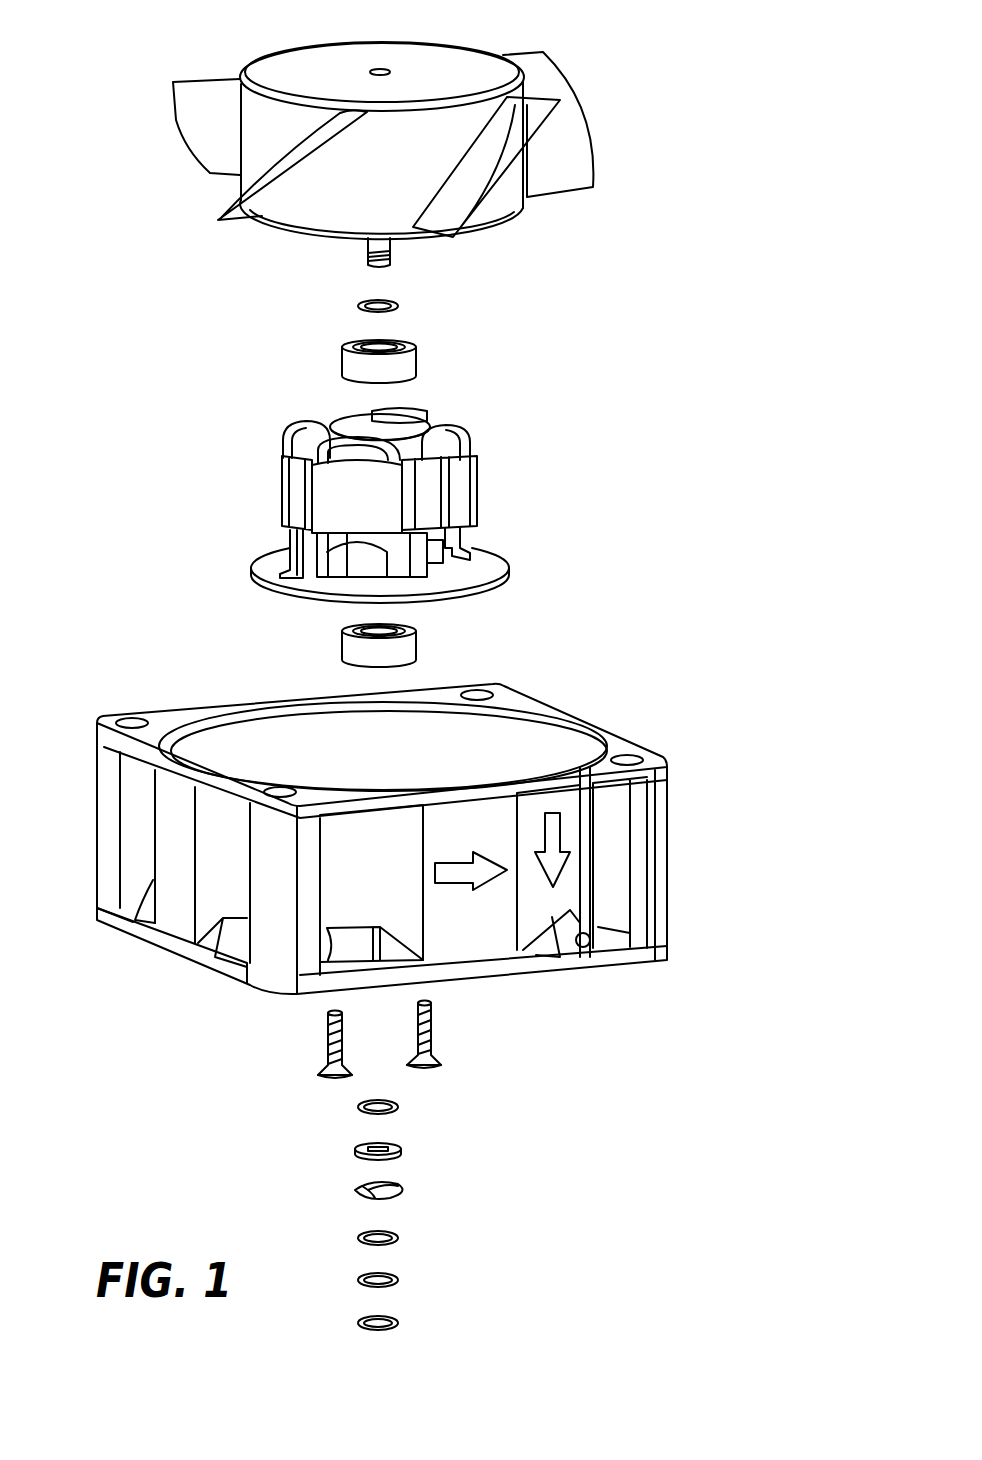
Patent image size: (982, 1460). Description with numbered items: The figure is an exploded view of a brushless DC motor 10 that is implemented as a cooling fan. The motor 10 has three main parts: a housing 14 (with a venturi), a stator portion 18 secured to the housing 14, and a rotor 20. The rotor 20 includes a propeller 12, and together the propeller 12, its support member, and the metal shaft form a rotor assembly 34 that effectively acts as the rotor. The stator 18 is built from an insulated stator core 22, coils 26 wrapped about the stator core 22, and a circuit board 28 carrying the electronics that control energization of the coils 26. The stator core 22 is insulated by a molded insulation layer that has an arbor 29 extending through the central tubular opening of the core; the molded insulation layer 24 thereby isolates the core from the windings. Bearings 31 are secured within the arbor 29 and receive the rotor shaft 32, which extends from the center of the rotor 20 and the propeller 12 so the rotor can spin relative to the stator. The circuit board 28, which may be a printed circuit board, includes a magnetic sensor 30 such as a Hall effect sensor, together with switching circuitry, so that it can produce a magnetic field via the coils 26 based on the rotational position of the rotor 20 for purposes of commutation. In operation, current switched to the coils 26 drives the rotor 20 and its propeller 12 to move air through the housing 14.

The motor 10 is at (774, 196).
The propeller 12 is at (288, 66).
The housing 14 is at (712, 870).
The stator portion 18 is at (248, 475).
The rotor 20 is at (516, 235).
The stator core 22 is at (467, 484).
The stator top plate 24 is at (410, 421).
The coils 26 is at (360, 448).
The circuit board 28 is at (477, 570).
The arbor 29 is at (412, 400).
The magnetic sensor 30 is at (293, 562).
The bearings 31 is at (401, 363).
The rotor shaft 32 is at (366, 245).
The rotor assembly 34 is at (600, 43).